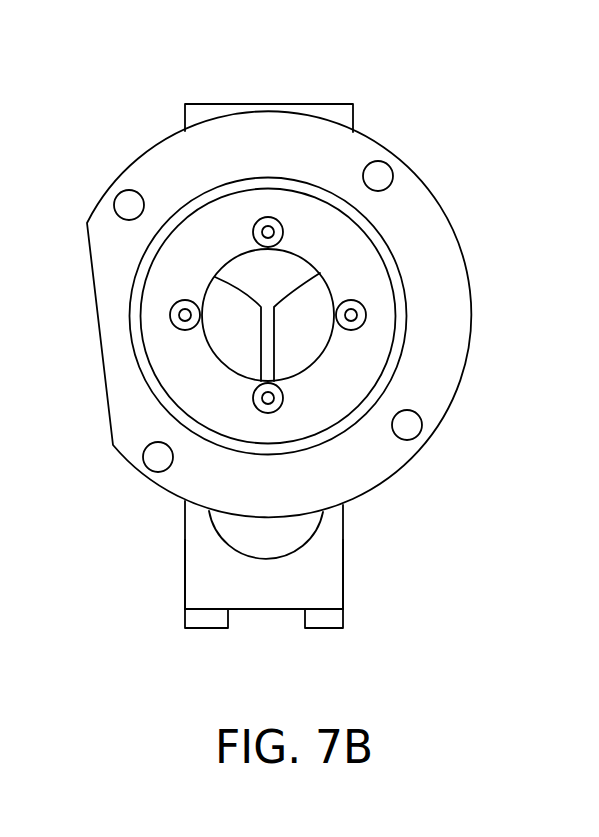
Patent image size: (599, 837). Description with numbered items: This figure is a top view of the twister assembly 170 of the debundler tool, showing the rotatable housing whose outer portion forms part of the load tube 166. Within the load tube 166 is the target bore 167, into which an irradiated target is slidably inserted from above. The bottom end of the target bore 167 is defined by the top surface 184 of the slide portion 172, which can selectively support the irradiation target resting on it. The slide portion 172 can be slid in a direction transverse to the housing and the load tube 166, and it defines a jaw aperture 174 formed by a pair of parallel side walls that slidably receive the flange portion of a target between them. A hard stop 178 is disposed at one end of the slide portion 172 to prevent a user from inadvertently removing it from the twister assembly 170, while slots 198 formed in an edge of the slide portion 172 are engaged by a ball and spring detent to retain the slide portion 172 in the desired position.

The twister assembly 170 is at (439, 111).
The load tube 166 is at (363, 283).
The target bore 167 is at (209, 354).
The jaw aperture 174 is at (268, 357).
The slide portion 172 is at (345, 515).
The top surface 184 is at (203, 580).
The slots 198 is at (343, 578).
The hard stop 178 is at (263, 611).